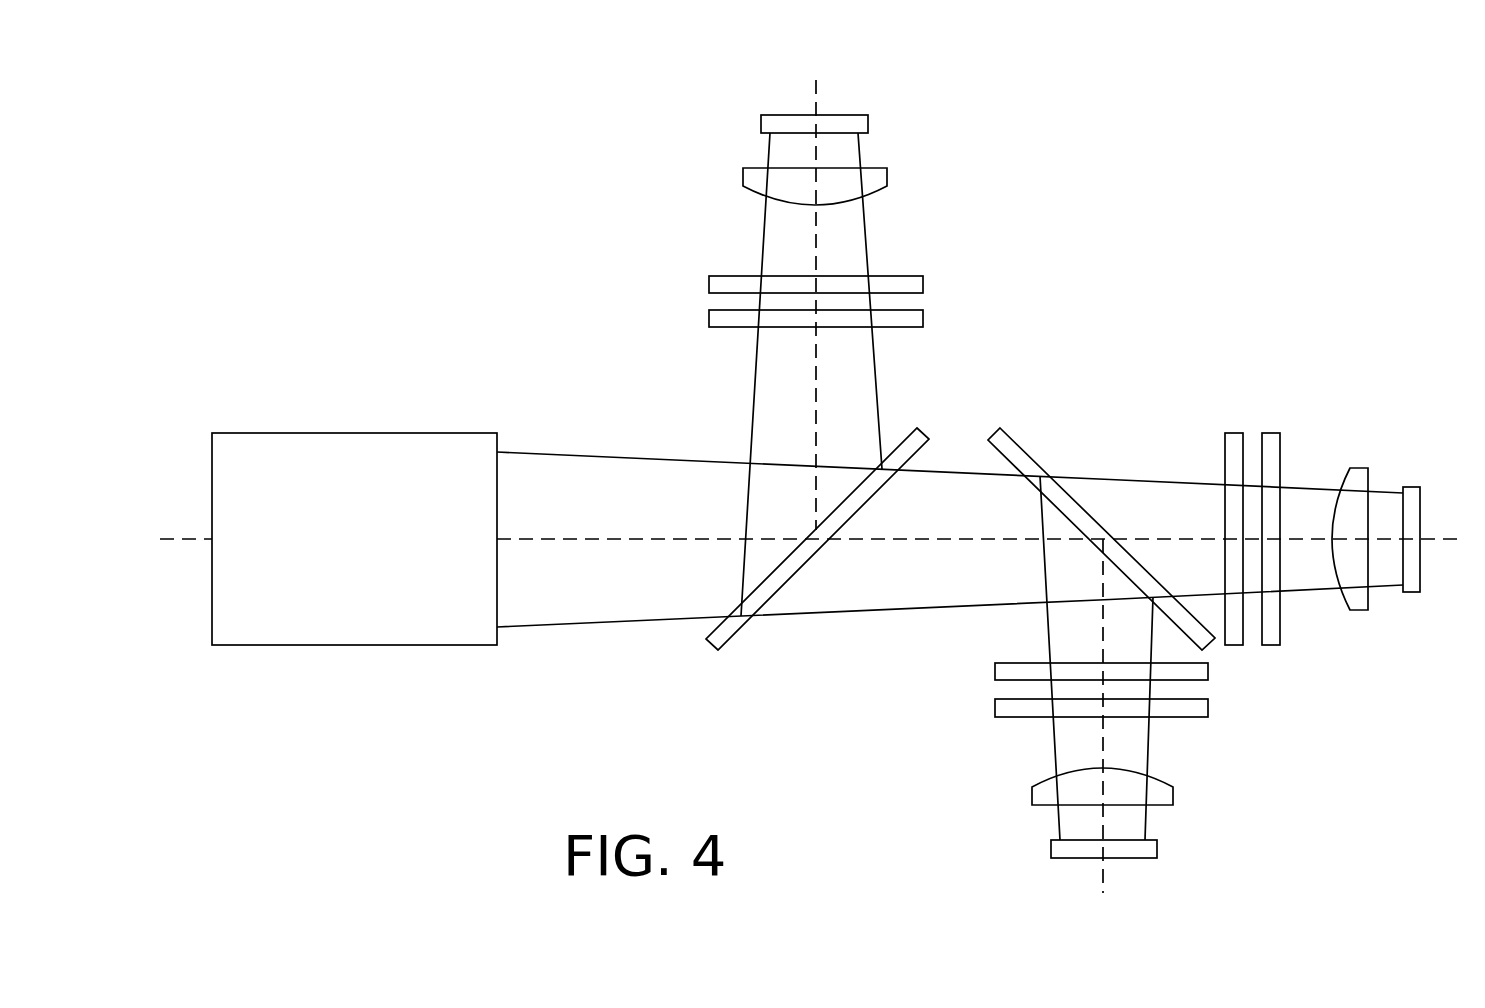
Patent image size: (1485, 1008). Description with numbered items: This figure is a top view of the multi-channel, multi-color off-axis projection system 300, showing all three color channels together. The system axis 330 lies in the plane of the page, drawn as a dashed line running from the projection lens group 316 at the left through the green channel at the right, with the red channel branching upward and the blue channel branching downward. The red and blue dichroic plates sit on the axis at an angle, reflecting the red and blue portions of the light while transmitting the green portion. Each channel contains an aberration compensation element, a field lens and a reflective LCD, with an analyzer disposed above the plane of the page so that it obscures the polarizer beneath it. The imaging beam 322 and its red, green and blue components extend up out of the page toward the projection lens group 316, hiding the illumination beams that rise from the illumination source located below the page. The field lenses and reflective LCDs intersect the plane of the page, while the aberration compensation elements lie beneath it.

The off-axis projection system 300 is at (304, 96).
The projection lens group 316 is at (281, 433).
The system axis 330 is at (817, 83).
The imaging beam 322 is at (585, 453).